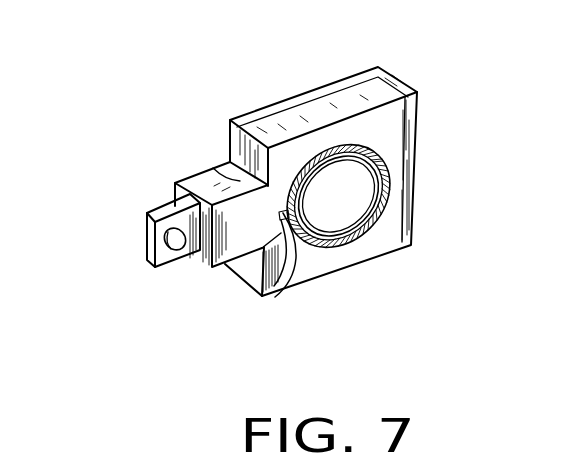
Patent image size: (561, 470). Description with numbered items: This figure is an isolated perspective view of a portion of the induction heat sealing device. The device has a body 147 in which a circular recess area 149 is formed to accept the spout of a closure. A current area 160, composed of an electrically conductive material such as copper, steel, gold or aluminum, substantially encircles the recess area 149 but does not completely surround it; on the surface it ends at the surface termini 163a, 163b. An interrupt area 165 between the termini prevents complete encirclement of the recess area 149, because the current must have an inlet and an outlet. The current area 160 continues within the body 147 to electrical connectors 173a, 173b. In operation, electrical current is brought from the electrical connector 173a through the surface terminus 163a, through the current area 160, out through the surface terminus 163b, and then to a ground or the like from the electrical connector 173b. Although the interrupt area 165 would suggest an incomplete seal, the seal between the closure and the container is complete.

The body 147 is at (417, 117).
The current area 160 is at (383, 218).
The circular recess area 149 is at (347, 229).
The surface terminus 163a is at (213, 168).
The surface terminus 163b is at (275, 297).
The interrupt area 165 is at (280, 217).
The electrical connector 173a is at (150, 216).
The electrical connector 173b is at (150, 272).